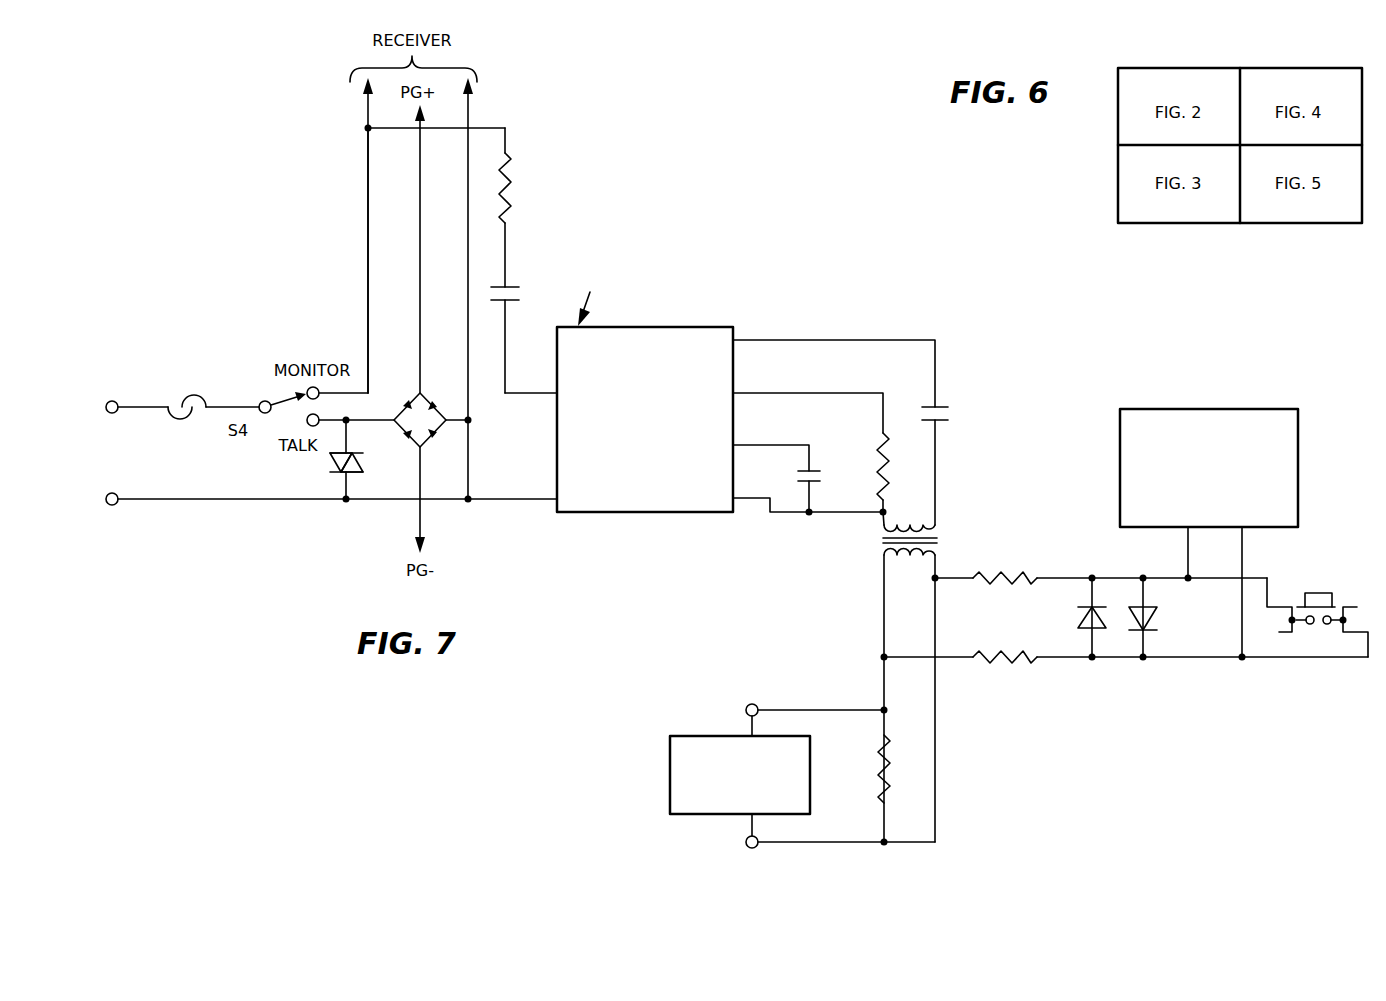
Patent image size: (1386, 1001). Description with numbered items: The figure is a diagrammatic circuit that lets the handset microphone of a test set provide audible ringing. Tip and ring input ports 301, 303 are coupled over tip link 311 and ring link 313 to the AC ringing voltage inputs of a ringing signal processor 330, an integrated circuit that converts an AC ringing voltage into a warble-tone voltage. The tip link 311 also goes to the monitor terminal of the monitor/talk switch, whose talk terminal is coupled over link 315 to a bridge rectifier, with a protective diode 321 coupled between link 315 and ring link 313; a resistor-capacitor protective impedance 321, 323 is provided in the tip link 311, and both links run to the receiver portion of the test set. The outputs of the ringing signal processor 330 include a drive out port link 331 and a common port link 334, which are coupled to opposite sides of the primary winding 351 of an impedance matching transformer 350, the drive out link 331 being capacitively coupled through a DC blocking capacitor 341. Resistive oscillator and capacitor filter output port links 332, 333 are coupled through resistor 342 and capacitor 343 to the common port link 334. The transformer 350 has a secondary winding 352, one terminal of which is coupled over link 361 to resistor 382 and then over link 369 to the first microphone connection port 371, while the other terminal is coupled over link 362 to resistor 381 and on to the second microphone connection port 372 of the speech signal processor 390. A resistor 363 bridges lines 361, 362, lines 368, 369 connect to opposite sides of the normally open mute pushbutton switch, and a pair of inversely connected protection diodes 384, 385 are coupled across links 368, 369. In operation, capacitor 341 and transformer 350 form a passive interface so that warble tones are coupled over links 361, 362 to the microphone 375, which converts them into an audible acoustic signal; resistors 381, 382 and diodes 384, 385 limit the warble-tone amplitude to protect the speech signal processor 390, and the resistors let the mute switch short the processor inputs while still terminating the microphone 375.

The tip input port 301 is at (112, 397).
The ring input port 303 is at (112, 505).
The tip link 311 is at (368, 255).
The ring link 313 is at (325, 500).
The link 315 is at (360, 423).
The protective diode 321 is at (512, 173).
The capacitor 323 is at (515, 293).
The ringing signal processor 330 is at (617, 513).
The drive out port link 331 is at (838, 340).
The resistive oscillator output port link 332 is at (842, 393).
The capacitor filter output port link 333 is at (757, 445).
The common port link 334 is at (782, 513).
The DC blocking capacitor 341 is at (940, 417).
The resistor 342 is at (877, 460).
The capacitor 343 is at (798, 480).
The impedance matching transformer 350 is at (910, 546).
The primary winding 351 is at (883, 527).
The secondary winding 352 is at (887, 558).
The link 361 is at (883, 685).
The link 362 is at (955, 577).
The resistor 363 is at (888, 770).
The line 368 is at (1168, 583).
The link 369 is at (1262, 660).
The first microphone connection port (MIC−) 371 is at (1242, 530).
The second microphone connection port (MIC+) 372 is at (1187, 528).
The microphone 375 is at (669, 778).
The resistor 381 is at (1015, 575).
The resistor 382 is at (1002, 652).
The protection diode 384 is at (1093, 643).
The protection diode 385 is at (1145, 643).
The speech signal processor 390 is at (1208, 408).